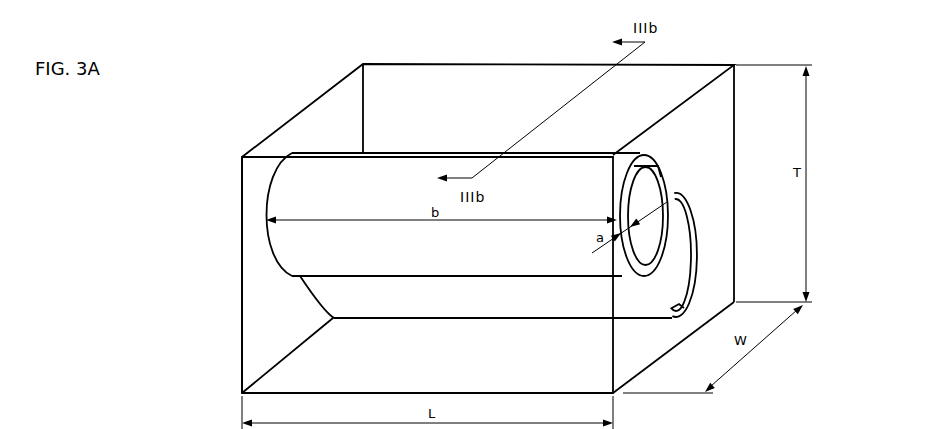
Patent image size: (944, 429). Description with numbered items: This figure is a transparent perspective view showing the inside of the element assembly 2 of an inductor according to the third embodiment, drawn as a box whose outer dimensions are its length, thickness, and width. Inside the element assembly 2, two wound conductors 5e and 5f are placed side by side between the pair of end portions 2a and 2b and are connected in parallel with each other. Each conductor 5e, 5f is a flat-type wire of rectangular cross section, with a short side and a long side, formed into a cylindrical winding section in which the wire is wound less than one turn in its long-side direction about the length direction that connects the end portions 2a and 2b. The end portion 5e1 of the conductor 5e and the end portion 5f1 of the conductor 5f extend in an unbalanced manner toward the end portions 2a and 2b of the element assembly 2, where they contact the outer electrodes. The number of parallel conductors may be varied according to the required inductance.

The element assembly 2 is at (484, 222).
The end portion of the element assembly 2a is at (258, 258).
The end portion of the element assembly 2b is at (722, 224).
The conductor 5e is at (486, 187).
The end portion of the conductor 5e1 is at (641, 157).
The conductor 5f is at (455, 286).
The end portion of the conductor 5f1 is at (681, 306).